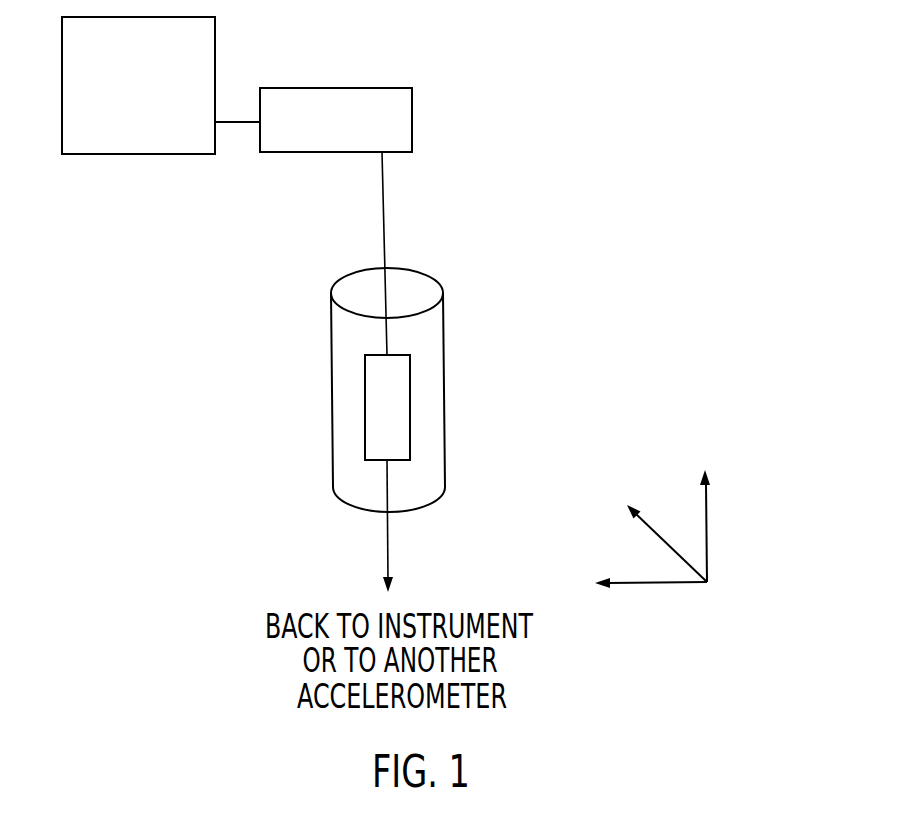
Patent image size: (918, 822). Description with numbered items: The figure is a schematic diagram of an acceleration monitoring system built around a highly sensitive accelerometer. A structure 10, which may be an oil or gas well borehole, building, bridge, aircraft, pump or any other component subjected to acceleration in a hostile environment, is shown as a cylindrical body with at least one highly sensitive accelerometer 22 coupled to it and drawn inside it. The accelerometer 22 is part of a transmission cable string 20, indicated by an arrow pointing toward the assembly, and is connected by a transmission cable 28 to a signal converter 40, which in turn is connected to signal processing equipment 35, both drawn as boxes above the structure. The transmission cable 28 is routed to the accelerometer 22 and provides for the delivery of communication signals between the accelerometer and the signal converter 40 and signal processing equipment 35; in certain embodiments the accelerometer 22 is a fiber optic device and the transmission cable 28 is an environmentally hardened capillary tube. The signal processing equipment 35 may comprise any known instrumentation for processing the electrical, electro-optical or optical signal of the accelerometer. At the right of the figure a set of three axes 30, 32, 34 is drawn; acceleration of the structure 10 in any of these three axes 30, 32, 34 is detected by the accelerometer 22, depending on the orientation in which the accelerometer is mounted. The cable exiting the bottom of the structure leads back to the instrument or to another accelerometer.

The structure 10 is at (445, 363).
The transmission cable string 20 is at (524, 268).
The highly sensitive accelerometer 22 is at (403, 417).
The transmission cable 28 is at (382, 228).
The axis 30 is at (648, 585).
The axis 32 is at (650, 522).
The axis 34 is at (708, 535).
The signal processing equipment 35 is at (124, 96).
The signal converter 40 is at (319, 134).